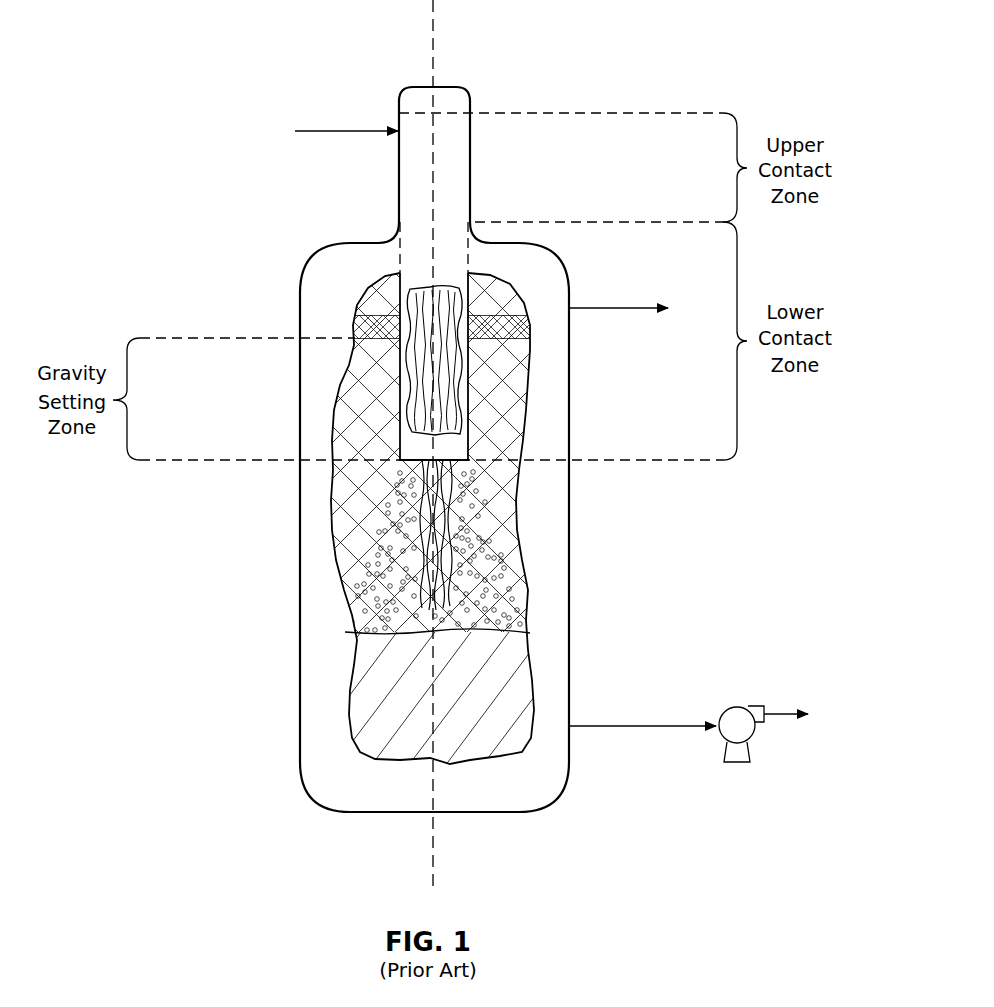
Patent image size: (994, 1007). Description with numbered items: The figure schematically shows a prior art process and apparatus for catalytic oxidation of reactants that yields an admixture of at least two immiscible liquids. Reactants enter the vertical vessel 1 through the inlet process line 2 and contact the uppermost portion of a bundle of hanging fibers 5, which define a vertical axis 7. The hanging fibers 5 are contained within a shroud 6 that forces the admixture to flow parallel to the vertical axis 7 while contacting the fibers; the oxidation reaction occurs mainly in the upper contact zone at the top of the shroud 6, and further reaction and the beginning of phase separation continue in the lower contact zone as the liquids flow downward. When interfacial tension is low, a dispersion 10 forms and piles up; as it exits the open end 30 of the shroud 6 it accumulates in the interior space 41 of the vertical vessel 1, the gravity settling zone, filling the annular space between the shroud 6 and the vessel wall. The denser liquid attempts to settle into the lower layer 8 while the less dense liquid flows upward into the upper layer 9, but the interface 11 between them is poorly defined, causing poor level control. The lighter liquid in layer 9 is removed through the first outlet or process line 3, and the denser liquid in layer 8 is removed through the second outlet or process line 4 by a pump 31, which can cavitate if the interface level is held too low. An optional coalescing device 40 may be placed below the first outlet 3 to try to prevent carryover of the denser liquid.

The vertical vessel 1 is at (527, 238).
The inlet process line 2 is at (337, 124).
The first outlet or process line 3 is at (629, 302).
The second outlet or process line 4 is at (640, 730).
The hanging fibers 5 is at (418, 362).
The shroud 6 is at (417, 436).
The vertical axis 7 is at (457, 42).
The layer 8 is at (402, 671).
The layer 9 is at (382, 504).
The dispersion 10 is at (374, 550).
The interface 11 is at (494, 634).
The open end 30 is at (464, 469).
The pump 31 is at (736, 716).
The coalescing device 40 is at (378, 307).
The interior space/volume 41 is at (372, 477).